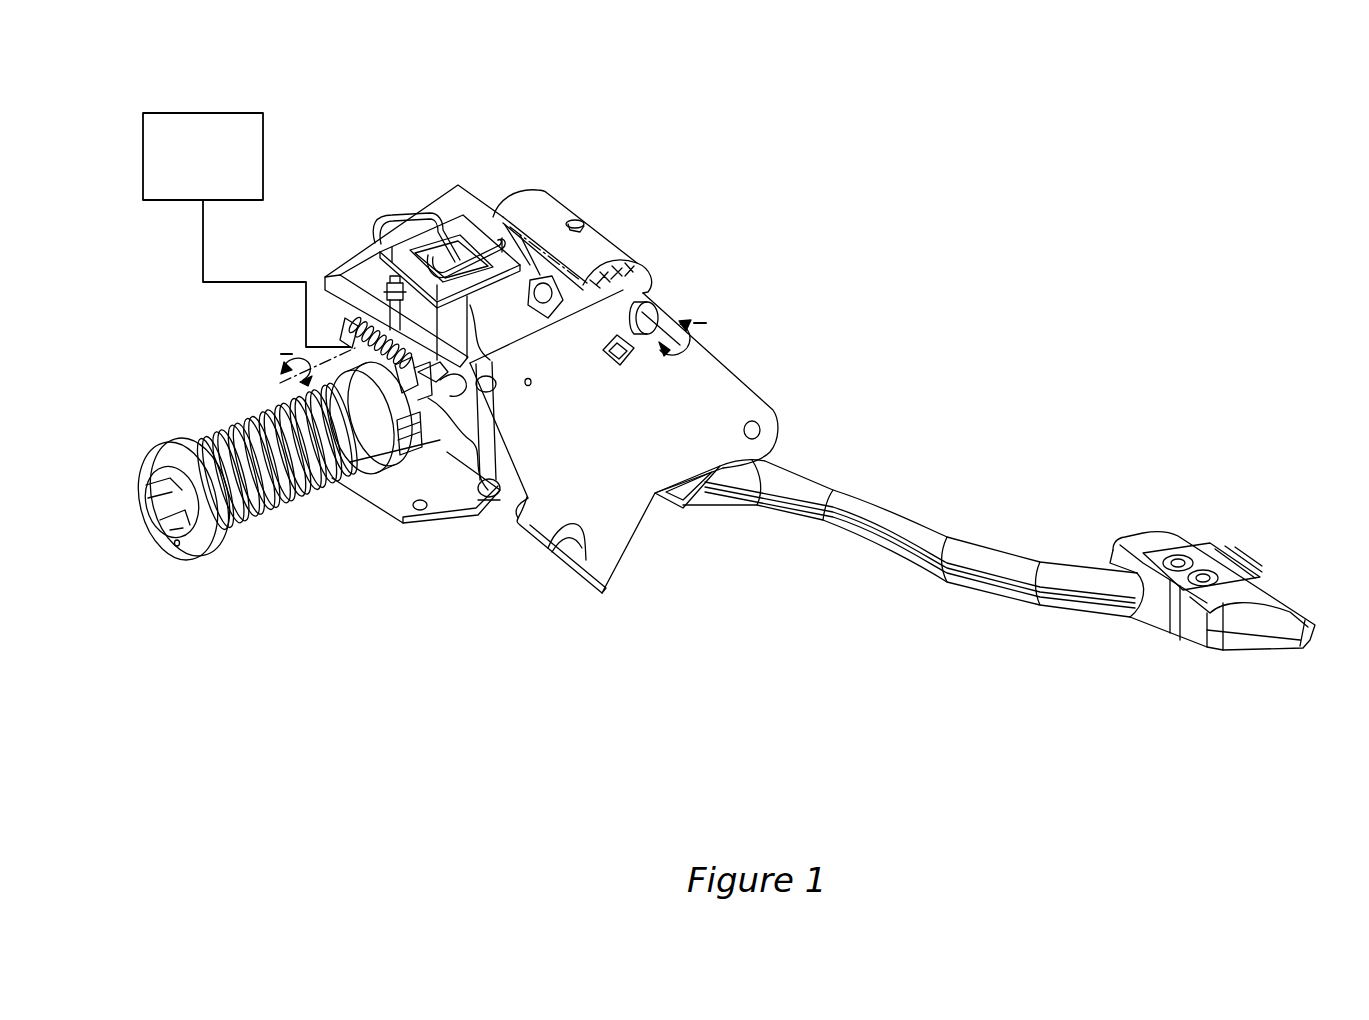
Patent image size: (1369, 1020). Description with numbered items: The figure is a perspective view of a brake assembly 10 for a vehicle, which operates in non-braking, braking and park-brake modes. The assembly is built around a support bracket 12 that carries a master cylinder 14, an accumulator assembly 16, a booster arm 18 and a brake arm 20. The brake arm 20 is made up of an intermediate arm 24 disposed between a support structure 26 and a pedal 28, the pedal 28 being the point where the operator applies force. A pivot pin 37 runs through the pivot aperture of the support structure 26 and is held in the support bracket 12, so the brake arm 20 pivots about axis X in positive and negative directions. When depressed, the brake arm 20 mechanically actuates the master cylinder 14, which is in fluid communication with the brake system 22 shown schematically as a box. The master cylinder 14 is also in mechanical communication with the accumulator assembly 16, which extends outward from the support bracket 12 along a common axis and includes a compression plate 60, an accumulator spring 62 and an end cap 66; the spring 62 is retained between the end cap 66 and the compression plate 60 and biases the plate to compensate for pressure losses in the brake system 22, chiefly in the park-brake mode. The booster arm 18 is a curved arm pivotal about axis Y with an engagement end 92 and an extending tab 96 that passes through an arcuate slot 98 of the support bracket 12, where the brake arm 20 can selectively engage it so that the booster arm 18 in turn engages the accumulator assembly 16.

The brake assembly 10 is at (884, 192).
The support bracket 12 is at (736, 352).
The master cylinder 14 is at (442, 205).
The accumulator assembly 16 is at (268, 560).
The booster arm 18 is at (432, 446).
The brake arm 20 is at (952, 520).
The brake system 22 is at (217, 114).
The intermediate arm 24 is at (883, 555).
The support structure 26 is at (558, 207).
The pedal 28 is at (1185, 540).
The pivot pin 37 is at (660, 306).
The compression plate 60 is at (382, 452).
The accumulator spring 62 is at (237, 430).
The end cap 66 is at (157, 437).
The engagement end 92 is at (405, 455).
The extending tab 96 is at (430, 420).
The arcuate slot 98 is at (430, 390).